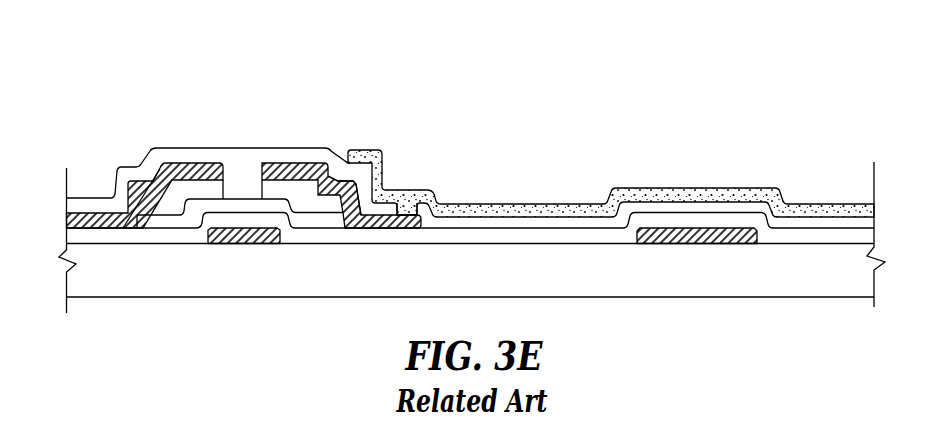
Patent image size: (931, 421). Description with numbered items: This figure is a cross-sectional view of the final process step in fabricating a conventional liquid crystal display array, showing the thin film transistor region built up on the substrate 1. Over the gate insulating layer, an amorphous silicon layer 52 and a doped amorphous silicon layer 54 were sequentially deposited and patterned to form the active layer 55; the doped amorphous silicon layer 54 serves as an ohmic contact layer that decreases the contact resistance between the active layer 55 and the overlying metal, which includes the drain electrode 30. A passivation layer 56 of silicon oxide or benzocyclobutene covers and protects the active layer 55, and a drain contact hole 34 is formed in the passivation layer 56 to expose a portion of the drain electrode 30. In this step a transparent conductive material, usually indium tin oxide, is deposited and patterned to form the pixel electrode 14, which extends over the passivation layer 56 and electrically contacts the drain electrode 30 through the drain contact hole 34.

The substrate 1 is at (443, 286).
The pixel electrode 14 is at (555, 204).
The drain electrode 30 is at (282, 163).
The drain contact hole 34 is at (399, 190).
The amorphous silicon layer 52 is at (290, 200).
The doped amorphous silicon layer 54 is at (346, 160).
The active layer 55 is at (352, 57).
The passivation layer 56 is at (242, 162).